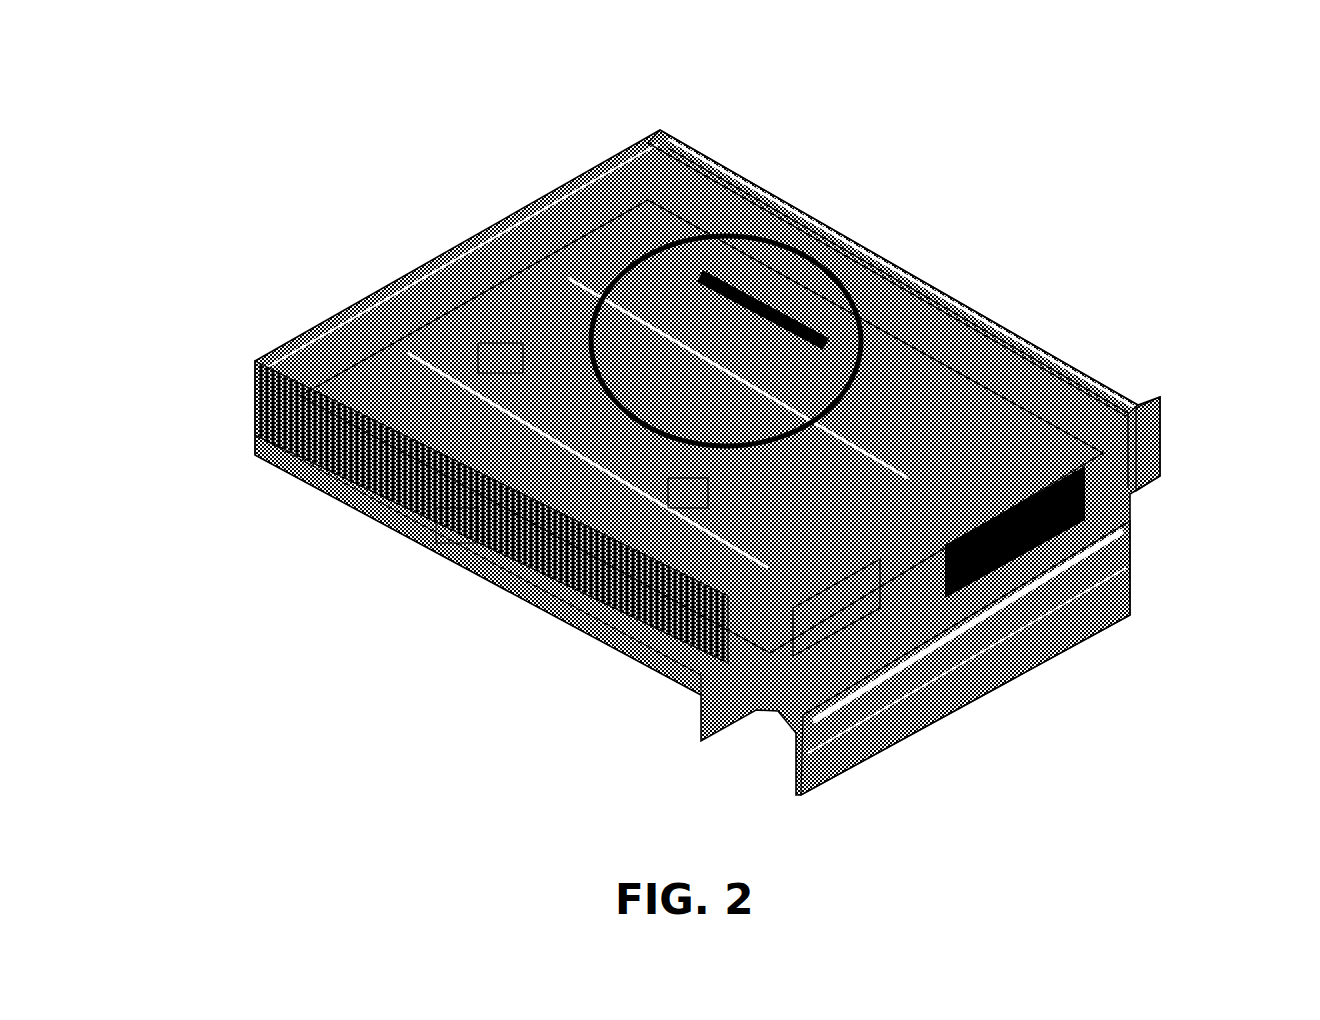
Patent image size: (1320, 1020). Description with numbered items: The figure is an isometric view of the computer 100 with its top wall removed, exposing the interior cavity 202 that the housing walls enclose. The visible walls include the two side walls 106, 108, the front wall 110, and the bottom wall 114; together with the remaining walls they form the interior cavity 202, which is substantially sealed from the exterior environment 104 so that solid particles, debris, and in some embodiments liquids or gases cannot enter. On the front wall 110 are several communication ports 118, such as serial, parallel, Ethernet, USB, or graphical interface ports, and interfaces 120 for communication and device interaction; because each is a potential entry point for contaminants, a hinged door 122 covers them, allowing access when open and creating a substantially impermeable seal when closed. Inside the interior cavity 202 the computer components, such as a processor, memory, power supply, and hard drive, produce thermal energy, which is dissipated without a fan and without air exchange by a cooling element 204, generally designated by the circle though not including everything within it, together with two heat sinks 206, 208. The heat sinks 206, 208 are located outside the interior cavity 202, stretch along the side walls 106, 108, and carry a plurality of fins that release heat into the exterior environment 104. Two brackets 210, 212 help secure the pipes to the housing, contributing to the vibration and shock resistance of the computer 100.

The computer 100 is at (1057, 142).
The exterior environment 104 is at (138, 138).
The side wall 106 is at (323, 462).
The side wall 108 is at (893, 259).
The front wall 110 is at (1140, 450).
The bottom wall 114 is at (478, 622).
The communication ports 118 is at (846, 604).
The interfaces 120 is at (1067, 520).
The hinged door 122 is at (1022, 630).
The interior cavity 202 is at (516, 294).
The cooling element 204 is at (822, 266).
The heat sink 206 is at (898, 318).
The heat sink 208 is at (447, 512).
The bracket 210 is at (677, 480).
The bracket 212 is at (490, 347).